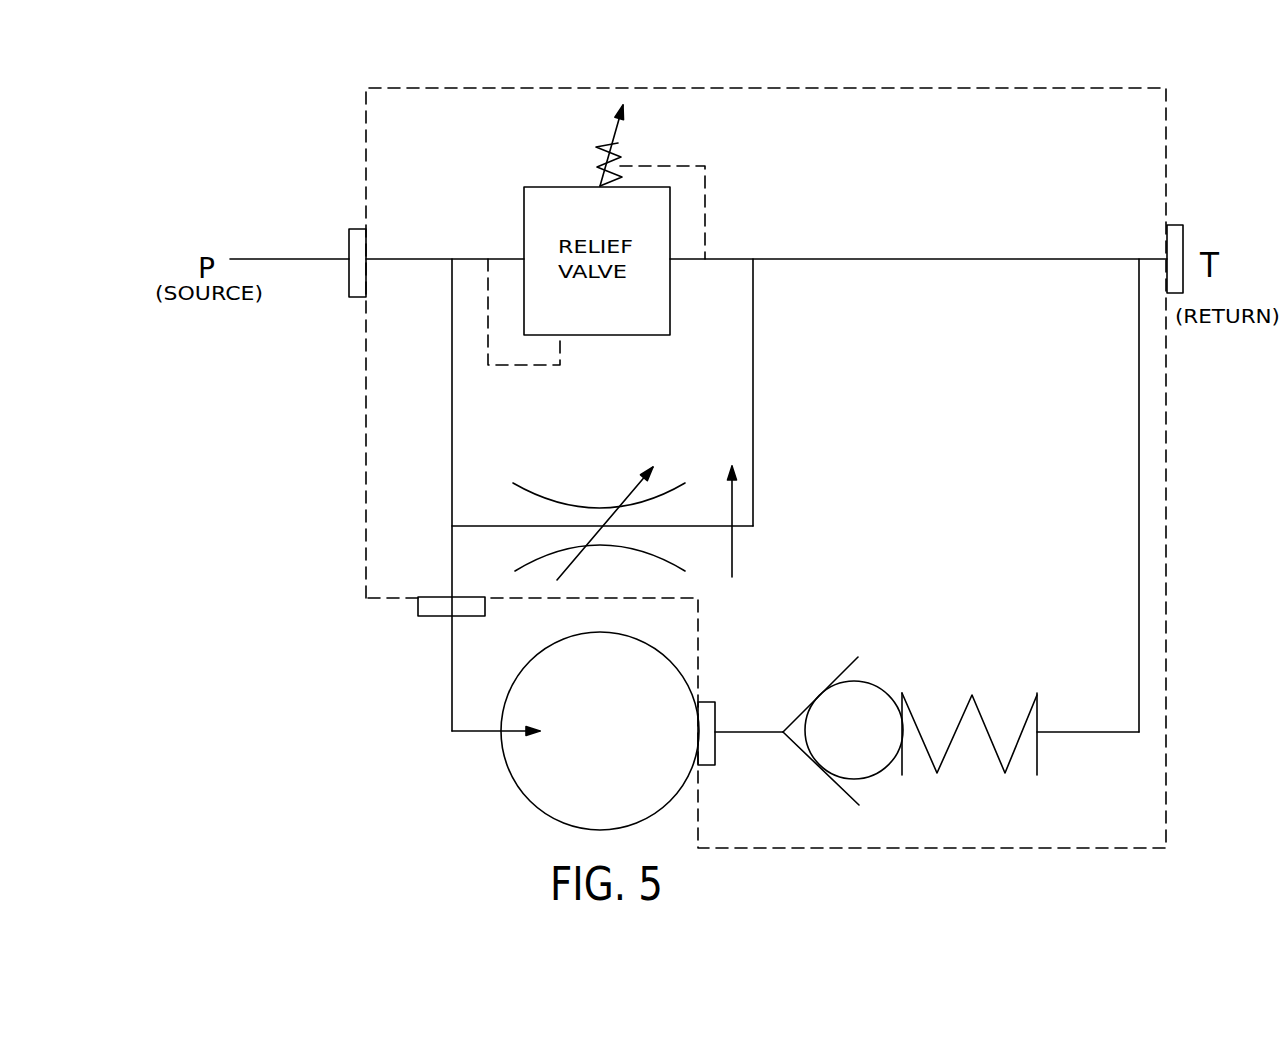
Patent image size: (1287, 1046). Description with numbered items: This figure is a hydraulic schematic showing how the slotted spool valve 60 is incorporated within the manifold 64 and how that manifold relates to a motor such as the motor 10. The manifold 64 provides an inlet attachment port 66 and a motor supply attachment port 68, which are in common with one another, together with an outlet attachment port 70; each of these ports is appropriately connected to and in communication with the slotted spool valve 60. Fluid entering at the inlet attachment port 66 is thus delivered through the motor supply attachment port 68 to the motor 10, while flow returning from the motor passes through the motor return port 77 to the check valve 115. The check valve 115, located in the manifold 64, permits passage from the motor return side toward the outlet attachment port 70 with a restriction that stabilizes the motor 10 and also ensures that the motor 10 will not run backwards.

The manifold 64 is at (766, 446).
The inlet attachment port 66 is at (252, 252).
The outlet attachment port 70 is at (1057, 251).
The slotted spool valve 60 is at (580, 482).
The motor supply attachment port 68 is at (302, 631).
The motor 10 is at (571, 731).
The motor return port 77 is at (874, 692).
The check valve 115 is at (877, 746).